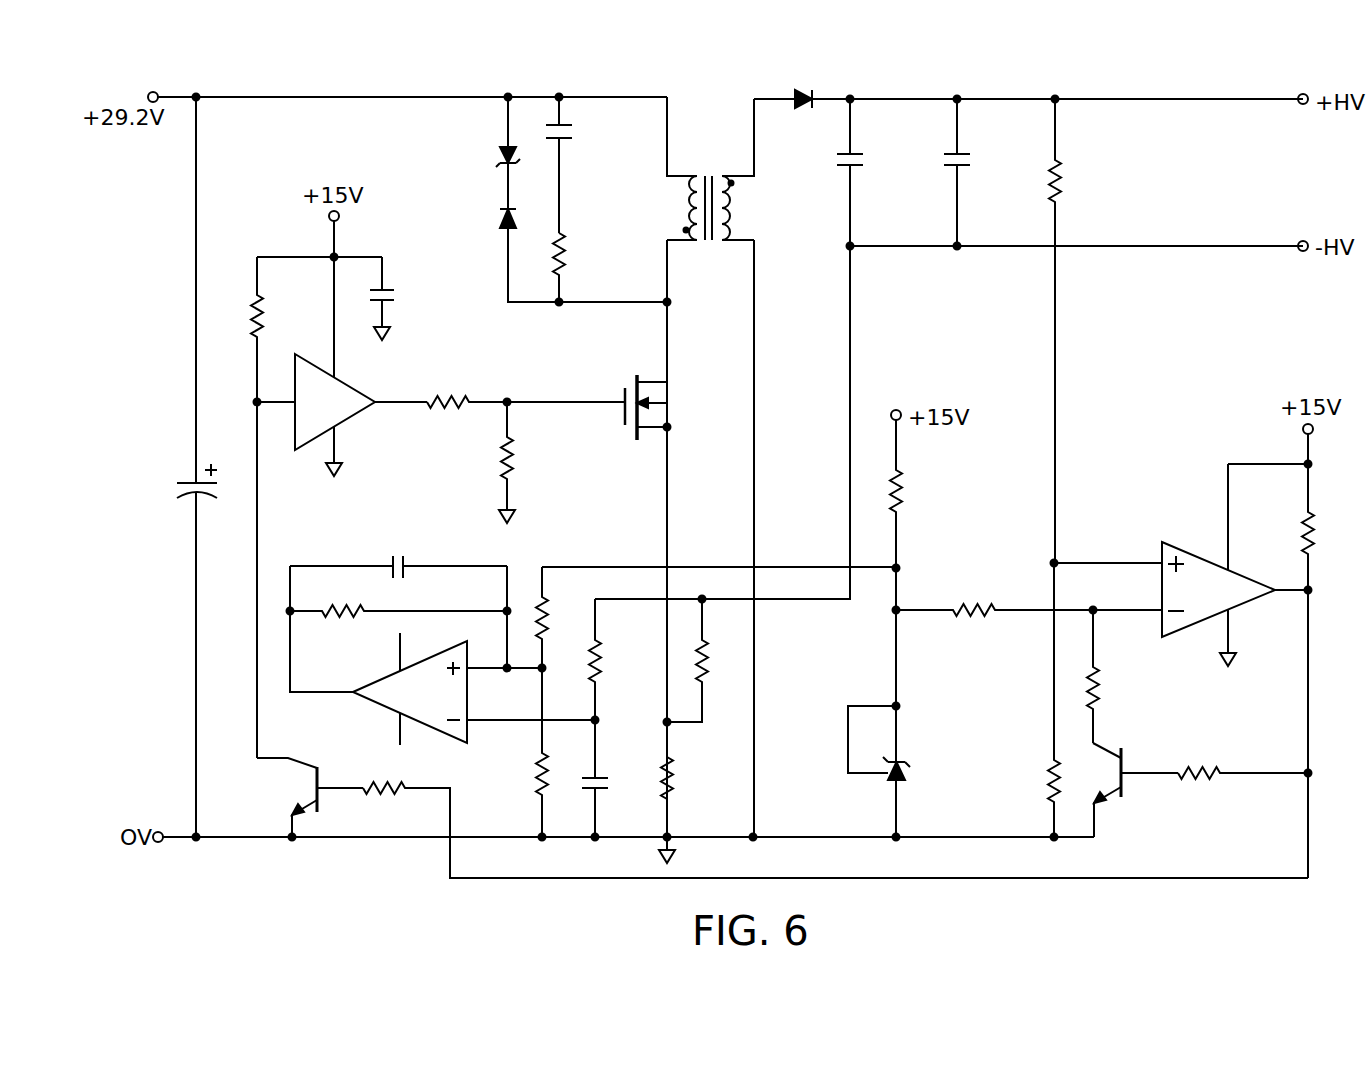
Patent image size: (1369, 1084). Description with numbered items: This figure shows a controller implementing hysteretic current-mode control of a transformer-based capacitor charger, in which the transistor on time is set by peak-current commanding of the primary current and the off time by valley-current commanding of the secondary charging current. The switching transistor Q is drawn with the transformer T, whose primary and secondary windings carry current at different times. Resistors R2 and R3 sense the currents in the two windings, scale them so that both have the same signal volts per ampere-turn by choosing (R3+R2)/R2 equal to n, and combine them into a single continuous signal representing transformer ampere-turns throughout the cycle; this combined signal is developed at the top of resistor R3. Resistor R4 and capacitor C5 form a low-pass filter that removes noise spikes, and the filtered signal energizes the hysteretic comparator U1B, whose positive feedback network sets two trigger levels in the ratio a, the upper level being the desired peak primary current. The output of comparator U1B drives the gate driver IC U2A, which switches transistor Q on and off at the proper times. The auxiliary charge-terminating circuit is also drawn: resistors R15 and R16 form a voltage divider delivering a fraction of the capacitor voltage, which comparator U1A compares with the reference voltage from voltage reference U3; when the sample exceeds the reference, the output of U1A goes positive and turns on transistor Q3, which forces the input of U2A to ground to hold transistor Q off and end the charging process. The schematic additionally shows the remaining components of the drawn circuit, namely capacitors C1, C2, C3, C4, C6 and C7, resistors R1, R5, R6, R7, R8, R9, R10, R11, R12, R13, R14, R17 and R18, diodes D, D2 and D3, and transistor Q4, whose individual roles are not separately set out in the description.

The input filter capacitor 10uF 35V C1 is at (175, 512).
The output capacitor 4.7uF 400V C2 is at (885, 172).
The output capacitor 4.7uF 400V C3 is at (992, 172).
The snubber capacitor 4.7nF 100V C4 is at (594, 165).
The capacitor C5 is at (617, 778).
The decoupling capacitor 100nF C6 is at (420, 298).
The feedback capacitor 100pF C7 is at (398, 556).
The snubber resistor 510 ohm R1 is at (589, 256).
The resistor R2 is at (694, 778).
The resistor R3 is at (707, 660).
The resistor R4 is at (619, 659).
The resistor 10K R5 is at (566, 617).
The resistor 1.1K R6 is at (520, 752).
The feedback resistor 160K R7 is at (398, 615).
The resistor 3.6K R8 is at (285, 329).
The resistor 47K R9 is at (835, 816).
The gate resistor 10 ohm R10 is at (466, 403).
The gate pull-down resistor 5.1K R11 is at (536, 462).
The resistor 3K R12 is at (921, 494).
The resistor 10K R13 is at (1029, 611).
The resistor 270 ohm R14 is at (1118, 676).
The resistor R15 is at (1089, 331).
The resistor R16 is at (1023, 700).
The resistor 47K R17 is at (1242, 749).
The pull-up resistor 7.5K R18 is at (1335, 512).
The output rectifier diode MUR150 D is at (802, 106).
The zener diode 1N3037B D2 is at (448, 148).
The diode MUR110 D3 is at (458, 222).
The transistor Q is at (589, 396).
The transistor Q3 is at (282, 797).
The transistor 2N3904 Q4 is at (1142, 795).
The flyback transformer RM8 1:n T is at (710, 467).
The comparator U1A is at (1181, 565).
The hysteretic comparator U1B is at (456, 689).
The gate driver IC U2A is at (341, 429).
The voltage reference U3 is at (860, 771).